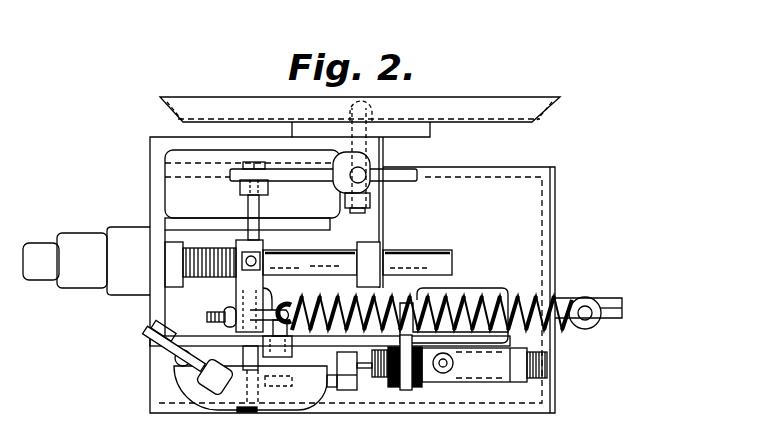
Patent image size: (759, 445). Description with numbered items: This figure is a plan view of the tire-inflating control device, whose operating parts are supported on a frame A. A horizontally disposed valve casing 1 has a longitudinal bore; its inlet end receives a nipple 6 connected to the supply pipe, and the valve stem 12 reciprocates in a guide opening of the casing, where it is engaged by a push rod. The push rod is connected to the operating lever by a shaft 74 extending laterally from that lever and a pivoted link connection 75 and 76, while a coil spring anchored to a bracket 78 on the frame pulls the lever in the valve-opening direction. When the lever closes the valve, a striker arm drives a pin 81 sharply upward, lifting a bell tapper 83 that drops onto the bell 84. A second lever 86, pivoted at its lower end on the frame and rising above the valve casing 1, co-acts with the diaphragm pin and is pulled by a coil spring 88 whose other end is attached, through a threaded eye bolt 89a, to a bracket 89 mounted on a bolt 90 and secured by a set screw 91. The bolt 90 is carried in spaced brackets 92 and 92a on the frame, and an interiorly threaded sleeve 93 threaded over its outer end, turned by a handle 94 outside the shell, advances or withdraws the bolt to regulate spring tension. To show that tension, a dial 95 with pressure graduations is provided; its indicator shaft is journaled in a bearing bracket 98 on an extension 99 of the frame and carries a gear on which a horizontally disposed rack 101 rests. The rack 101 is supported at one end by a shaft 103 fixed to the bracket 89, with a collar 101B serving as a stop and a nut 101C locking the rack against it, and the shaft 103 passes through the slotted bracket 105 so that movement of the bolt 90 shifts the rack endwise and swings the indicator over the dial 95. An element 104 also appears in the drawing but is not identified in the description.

The valve casing 1 is at (477, 383).
The nipple 6 is at (517, 383).
The valve stem 12 is at (360, 360).
The shaft 74 is at (282, 362).
The pivoted link connection 75 is at (332, 386).
The pivoted link connection 76 is at (362, 391).
The bracket 78 is at (479, 291).
The pin 81 is at (180, 362).
The bell tapper 83 is at (202, 368).
The bell 84 is at (212, 393).
The lever 86 is at (619, 298).
The coil spring 88 is at (530, 300).
The bracket 89 is at (234, 295).
The threaded eye bolt 89a is at (212, 313).
The bolt 90 is at (411, 255).
The set screw 91 is at (268, 256).
The bracket 92 is at (133, 227).
The bracket 92a is at (371, 250).
The interiorly threaded sleeve 93 is at (76, 232).
The handle 94 is at (42, 280).
The dial 95 is at (542, 97).
The bearing bracket 98 is at (432, 136).
The extension 99 is at (165, 136).
The rack 101 is at (412, 177).
The collar 101B is at (245, 187).
The nut 101C is at (252, 162).
The shaft 103 is at (247, 204).
The cavity 104 is at (179, 217).
The bracket 105 is at (281, 218).
The frame A is at (555, 205).